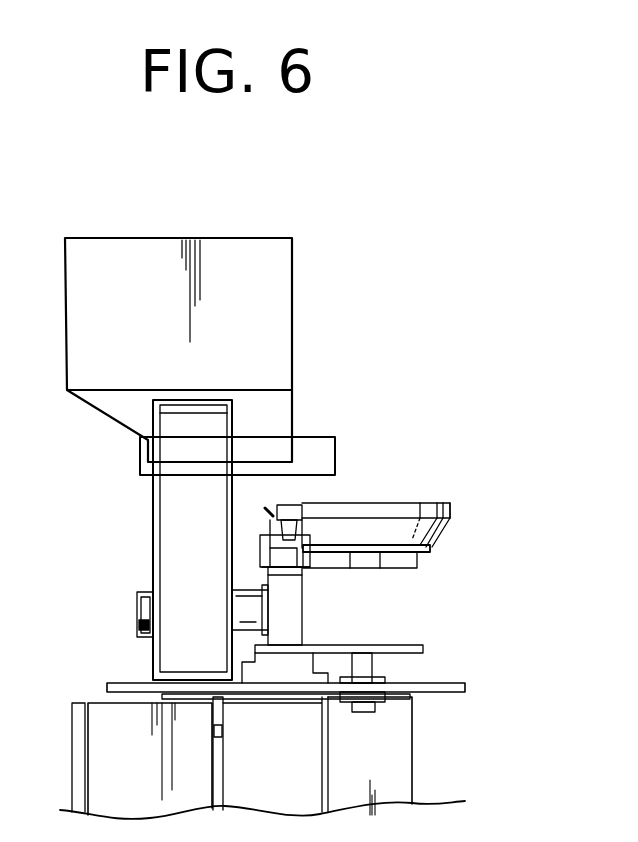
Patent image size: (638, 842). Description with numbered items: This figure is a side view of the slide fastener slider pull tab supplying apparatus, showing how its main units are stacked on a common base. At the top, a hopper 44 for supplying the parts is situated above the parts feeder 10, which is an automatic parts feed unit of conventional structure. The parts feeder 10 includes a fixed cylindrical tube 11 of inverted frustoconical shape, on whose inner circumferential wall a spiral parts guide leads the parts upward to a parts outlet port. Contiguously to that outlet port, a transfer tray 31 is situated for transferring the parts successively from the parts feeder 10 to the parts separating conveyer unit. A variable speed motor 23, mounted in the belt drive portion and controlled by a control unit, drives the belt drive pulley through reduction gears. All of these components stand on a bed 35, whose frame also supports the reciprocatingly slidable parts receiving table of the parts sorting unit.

The hopper 44 is at (277, 290).
The parts feeder 10 is at (426, 504).
The fixed cylindrical tube 11 is at (452, 517).
The transfer tray 31 is at (293, 500).
The variable speed motor 23 is at (140, 593).
The bed 35 is at (258, 700).